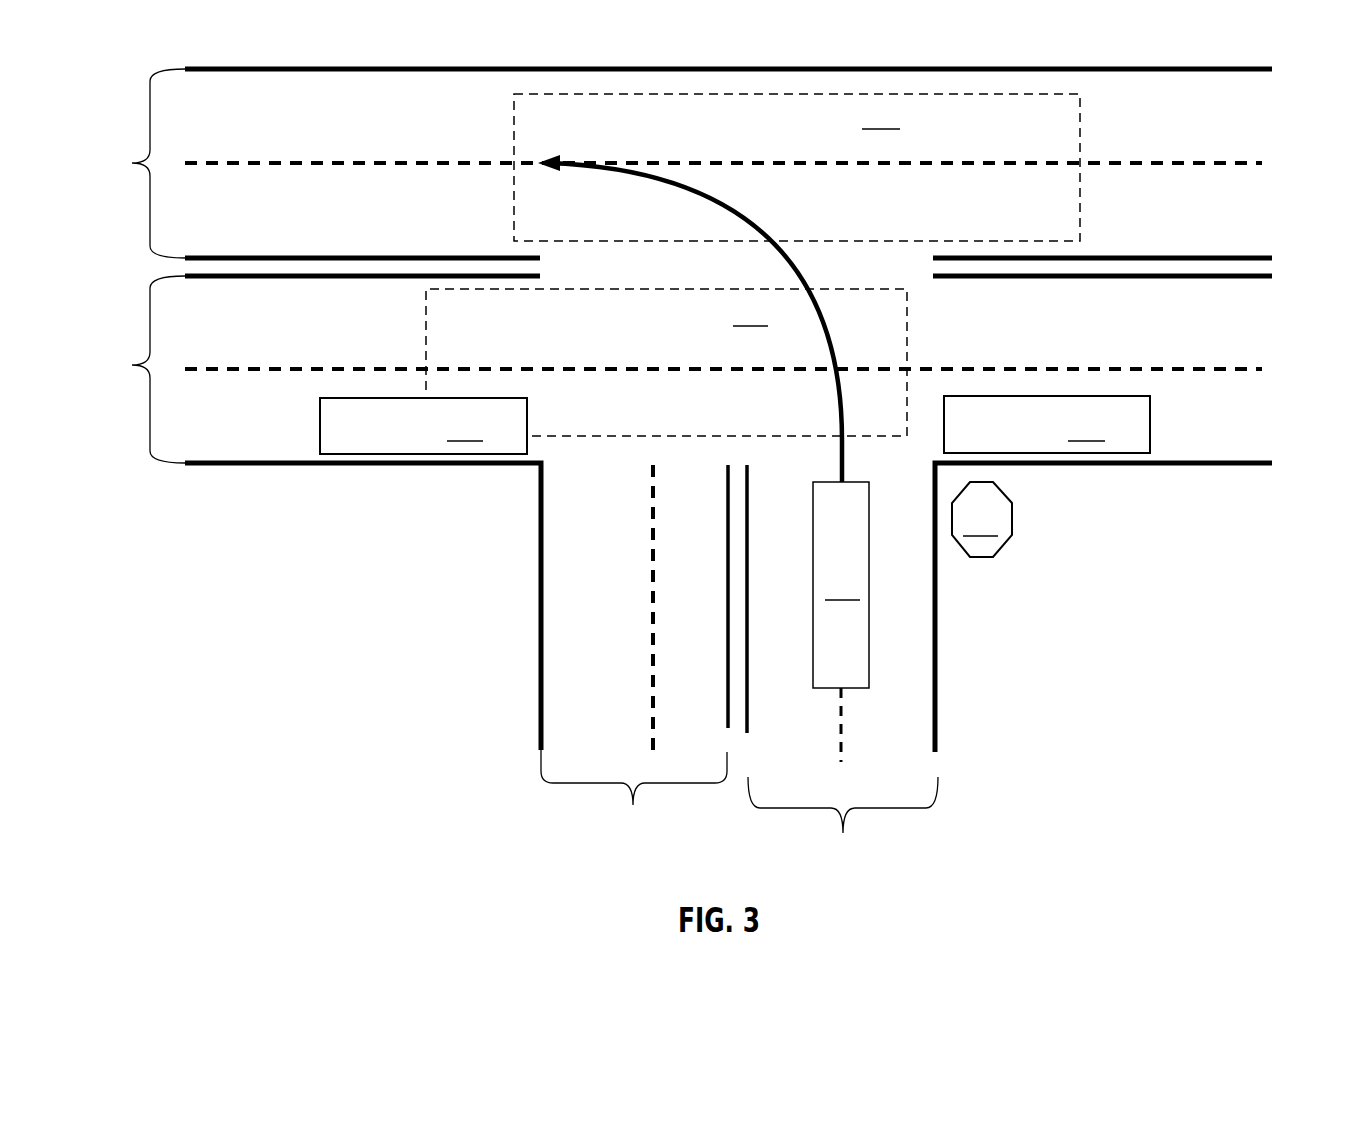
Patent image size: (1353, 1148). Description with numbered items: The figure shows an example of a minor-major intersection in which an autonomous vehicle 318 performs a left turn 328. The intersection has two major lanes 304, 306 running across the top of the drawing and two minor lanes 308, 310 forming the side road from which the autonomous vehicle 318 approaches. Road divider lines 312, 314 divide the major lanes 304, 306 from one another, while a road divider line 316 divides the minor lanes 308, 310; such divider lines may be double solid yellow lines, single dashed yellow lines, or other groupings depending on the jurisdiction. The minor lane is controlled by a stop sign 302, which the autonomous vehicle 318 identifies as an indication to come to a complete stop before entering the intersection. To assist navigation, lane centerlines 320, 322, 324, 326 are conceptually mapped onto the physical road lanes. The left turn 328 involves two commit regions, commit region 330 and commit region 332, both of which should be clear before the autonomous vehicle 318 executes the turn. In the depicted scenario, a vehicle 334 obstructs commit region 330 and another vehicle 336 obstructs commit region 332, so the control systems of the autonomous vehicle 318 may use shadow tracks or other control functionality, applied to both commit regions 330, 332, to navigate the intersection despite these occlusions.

The stop sign 302 is at (982, 519).
The major lane 304 is at (132, 163).
The major lane 306 is at (132, 365).
The minor lane 308 is at (541, 771).
The minor lane 310 is at (938, 800).
The road divider line 312 is at (268, 247).
The road divider line 314 is at (1227, 282).
The road divider line 316 is at (723, 682).
The autonomous vehicle 318 is at (841, 585).
The lane centerline 320 is at (1193, 175).
The lane centerline 322 is at (295, 360).
The lane centerline 324 is at (628, 587).
The lane centerline 326 is at (838, 707).
The left turn 328 is at (823, 445).
The commit region 330 is at (666, 362).
The commit region 332 is at (797, 167).
The vehicle 334 is at (423, 426).
The vehicle 336 is at (1047, 424).